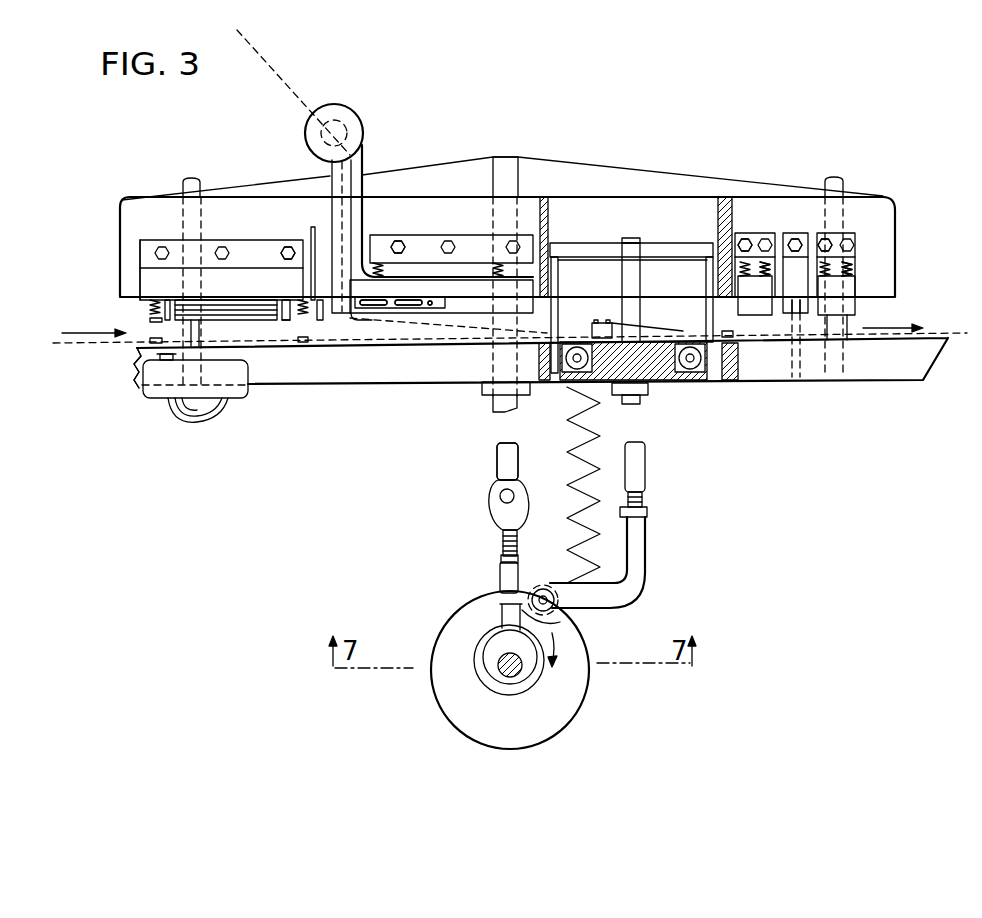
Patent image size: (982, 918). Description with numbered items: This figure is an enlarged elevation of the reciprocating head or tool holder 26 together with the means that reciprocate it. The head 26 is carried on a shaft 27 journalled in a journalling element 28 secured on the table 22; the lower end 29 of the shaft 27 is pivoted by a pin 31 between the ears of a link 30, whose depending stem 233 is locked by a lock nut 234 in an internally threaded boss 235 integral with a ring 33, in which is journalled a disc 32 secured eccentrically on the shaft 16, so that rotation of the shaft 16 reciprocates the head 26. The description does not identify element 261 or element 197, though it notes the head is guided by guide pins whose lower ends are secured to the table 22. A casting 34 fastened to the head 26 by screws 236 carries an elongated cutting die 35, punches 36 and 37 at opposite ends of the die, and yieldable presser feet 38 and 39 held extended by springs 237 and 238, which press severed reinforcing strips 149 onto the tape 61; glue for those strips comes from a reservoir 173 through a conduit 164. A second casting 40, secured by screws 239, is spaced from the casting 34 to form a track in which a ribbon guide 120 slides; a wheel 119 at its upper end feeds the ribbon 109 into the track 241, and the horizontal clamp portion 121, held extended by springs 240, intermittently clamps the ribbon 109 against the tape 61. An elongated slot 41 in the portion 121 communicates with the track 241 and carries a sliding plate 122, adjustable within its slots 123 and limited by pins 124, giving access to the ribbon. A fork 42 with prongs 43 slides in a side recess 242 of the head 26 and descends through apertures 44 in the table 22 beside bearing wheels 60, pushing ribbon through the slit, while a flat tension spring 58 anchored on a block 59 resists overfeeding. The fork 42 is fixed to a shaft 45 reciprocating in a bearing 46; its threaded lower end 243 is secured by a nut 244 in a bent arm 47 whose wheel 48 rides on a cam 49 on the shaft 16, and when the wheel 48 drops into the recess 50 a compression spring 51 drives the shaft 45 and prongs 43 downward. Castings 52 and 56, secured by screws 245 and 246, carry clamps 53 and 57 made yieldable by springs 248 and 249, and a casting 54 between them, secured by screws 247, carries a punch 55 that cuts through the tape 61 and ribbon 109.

The ribbon 109 is at (268, 58).
The wheel 119 is at (306, 120).
The ribbon guide 120 is at (332, 170).
The track 241 is at (363, 172).
The reciprocating head 26 is at (603, 168).
The side recess 242 is at (667, 213).
The guide bolt 261 is at (188, 180).
The screws 236 is at (162, 247).
The presser foot 39 is at (298, 251).
The spring 238 is at (308, 298).
The casting 34 is at (145, 284).
The punch 36 is at (168, 305).
The spring 237 is at (150, 311).
The presser foot 38 is at (148, 321).
The cutting die 35 is at (265, 318).
The punch 37 is at (288, 322).
The table 22 is at (268, 378).
The tape 61 is at (75, 346).
The conveyor line 197 is at (962, 332).
The reinforcing strips 149 is at (140, 349).
The glue reservoir 173 is at (152, 396).
The conduit 164 is at (187, 419).
The second casting 40 is at (438, 234).
The screws 239 is at (405, 246).
The springs 240 is at (378, 262).
The clamp portion 121 is at (473, 299).
The pins 124 is at (401, 300).
The slots 123 is at (378, 304).
The plate 122 is at (427, 304).
The elongated slot 41 is at (440, 298).
The journalling element 28 is at (484, 388).
The shaft 27 is at (497, 408).
The fork 42 is at (596, 250).
The prongs 43 is at (554, 276).
The tension spring 58 is at (641, 330).
The block 59 is at (594, 323).
The bearing wheels 60 is at (574, 360).
The apertures 44 is at (710, 377).
The bearing 46 is at (648, 390).
The casting 52 is at (773, 233).
The screws 245 is at (745, 243).
The springs 248 is at (750, 272).
The clamp 53 is at (766, 272).
The casting 54 is at (802, 237).
The screws 247 is at (794, 243).
The punch 55 is at (800, 313).
The casting 56 is at (855, 237).
The screws 246 is at (826, 243).
The springs 249 is at (855, 268).
The clamp 57 is at (848, 307).
The compression spring 51 is at (583, 473).
The lower end of shaft 29 is at (497, 473).
The link 30 is at (497, 518).
The pin 31 is at (500, 497).
The stem 233 is at (503, 540).
The lock nut 234 is at (502, 559).
The boss 235 is at (500, 580).
The shaft 45 is at (645, 471).
The lower end of shaft 243 is at (645, 498).
The nut 244 is at (647, 515).
The arm 47 is at (638, 578).
The wheel 48 is at (541, 589).
The recess 50 is at (550, 618).
The cam 49 is at (583, 712).
The ring 33 is at (533, 688).
The disc 32 is at (495, 652).
The shaft 16 is at (505, 665).